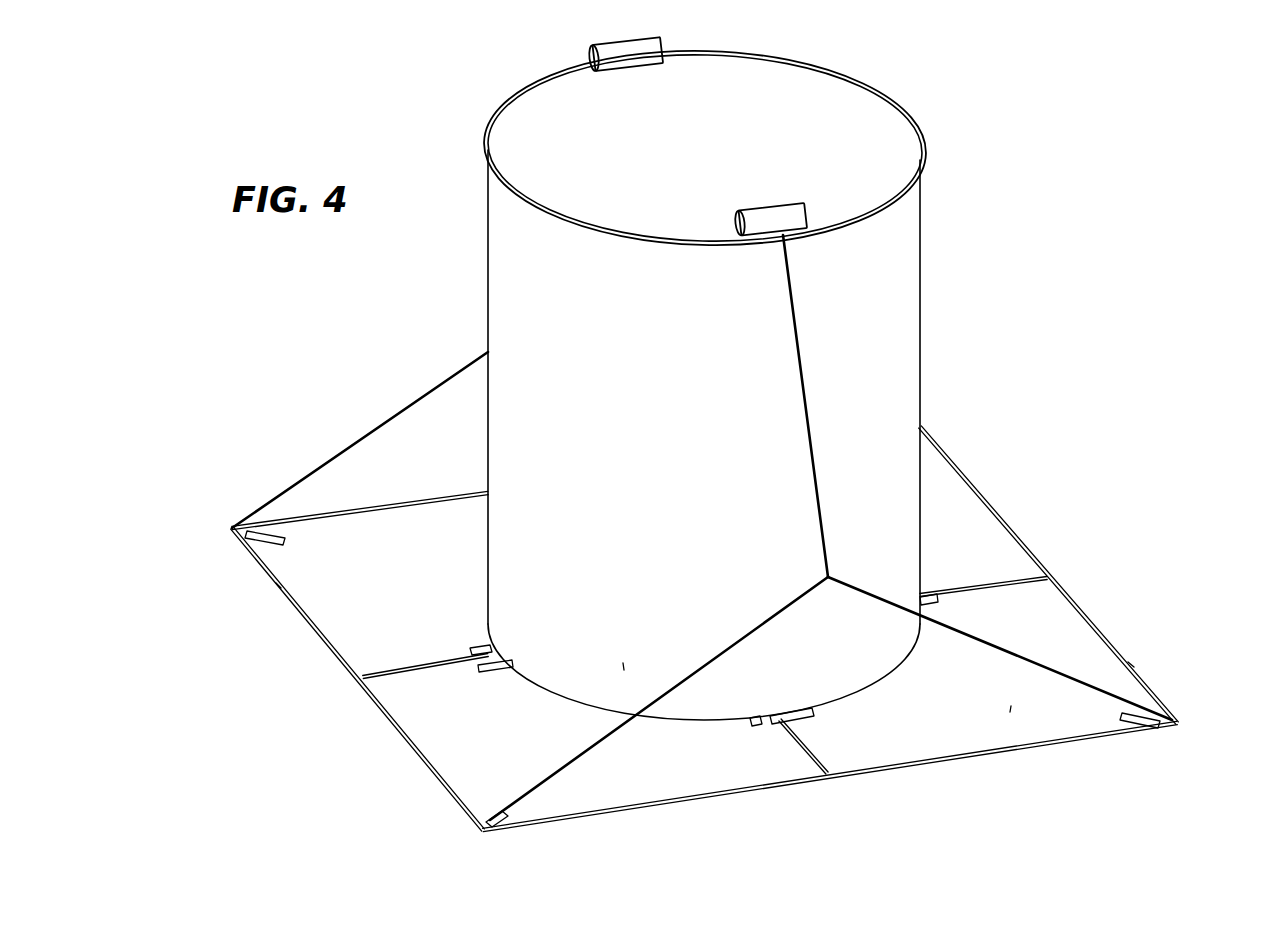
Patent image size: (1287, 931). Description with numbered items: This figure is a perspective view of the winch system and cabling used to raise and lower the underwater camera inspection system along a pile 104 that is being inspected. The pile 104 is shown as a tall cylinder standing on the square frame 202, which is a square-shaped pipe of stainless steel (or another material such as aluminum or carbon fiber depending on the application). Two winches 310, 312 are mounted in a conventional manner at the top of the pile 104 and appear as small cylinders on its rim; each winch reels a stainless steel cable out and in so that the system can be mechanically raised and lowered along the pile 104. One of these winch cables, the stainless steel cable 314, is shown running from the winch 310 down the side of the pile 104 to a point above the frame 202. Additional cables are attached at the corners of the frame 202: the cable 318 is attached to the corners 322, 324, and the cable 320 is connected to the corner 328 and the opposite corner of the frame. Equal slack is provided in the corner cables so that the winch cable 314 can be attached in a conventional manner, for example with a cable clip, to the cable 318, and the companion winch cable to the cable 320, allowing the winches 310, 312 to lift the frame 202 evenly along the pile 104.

The pile 104 is at (537, 80).
The winch 312 is at (590, 54).
The winch 310 is at (923, 163).
The stainless steel cable 314 is at (803, 352).
The frame 202 is at (948, 760).
The cable 320 is at (400, 412).
The cable 318 is at (558, 773).
The corner 328 is at (230, 528).
The corner 324 is at (480, 832).
The corner 322 is at (1180, 725).